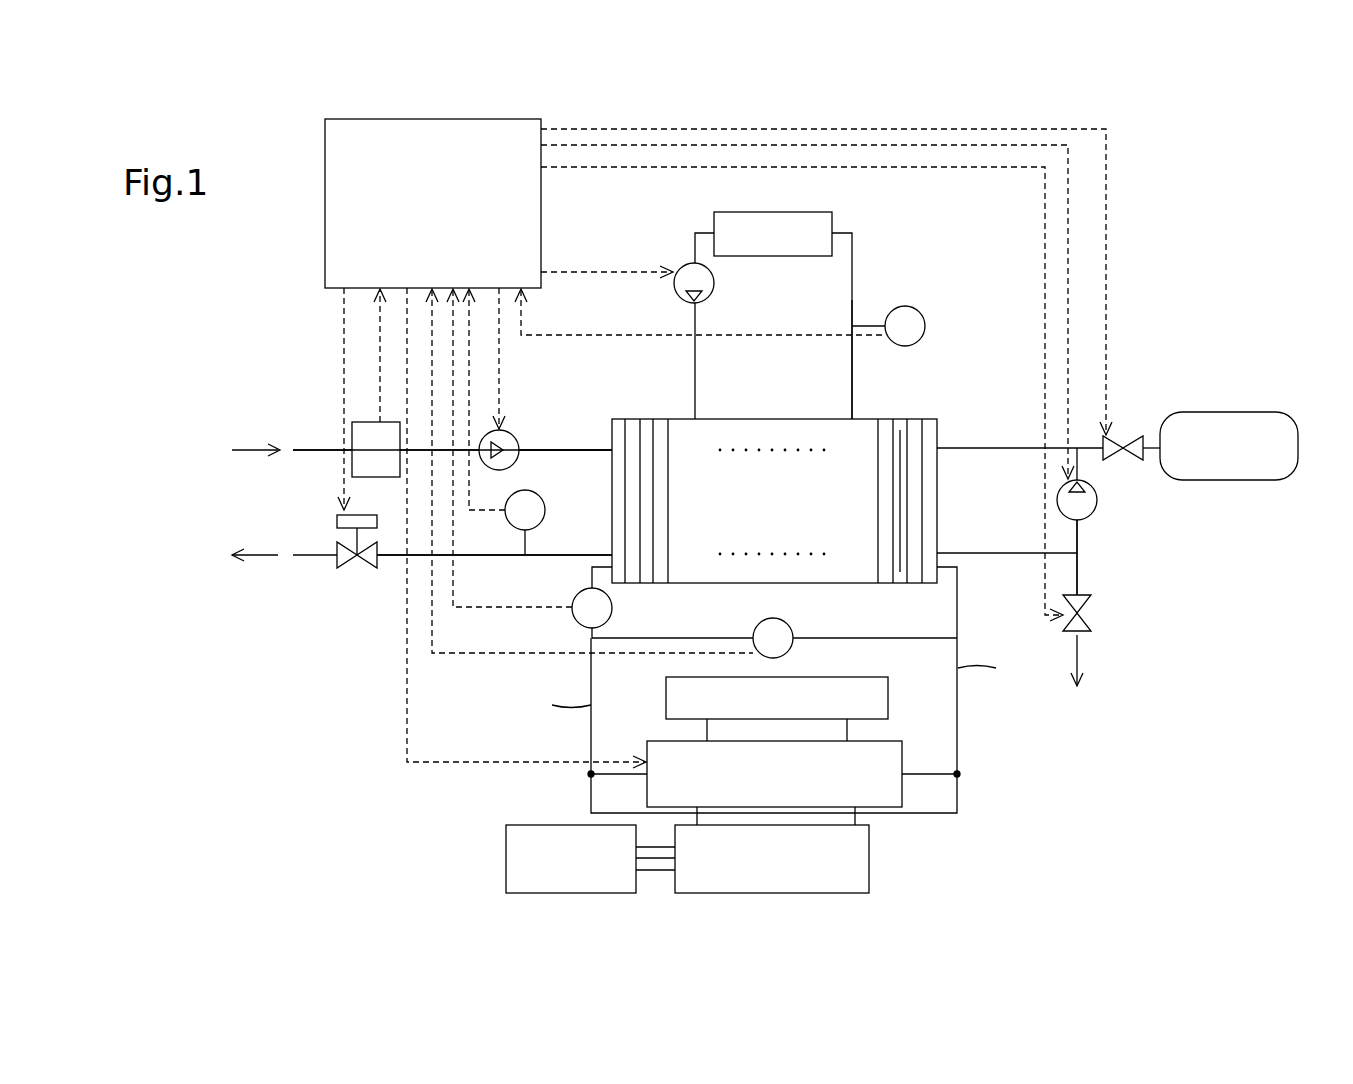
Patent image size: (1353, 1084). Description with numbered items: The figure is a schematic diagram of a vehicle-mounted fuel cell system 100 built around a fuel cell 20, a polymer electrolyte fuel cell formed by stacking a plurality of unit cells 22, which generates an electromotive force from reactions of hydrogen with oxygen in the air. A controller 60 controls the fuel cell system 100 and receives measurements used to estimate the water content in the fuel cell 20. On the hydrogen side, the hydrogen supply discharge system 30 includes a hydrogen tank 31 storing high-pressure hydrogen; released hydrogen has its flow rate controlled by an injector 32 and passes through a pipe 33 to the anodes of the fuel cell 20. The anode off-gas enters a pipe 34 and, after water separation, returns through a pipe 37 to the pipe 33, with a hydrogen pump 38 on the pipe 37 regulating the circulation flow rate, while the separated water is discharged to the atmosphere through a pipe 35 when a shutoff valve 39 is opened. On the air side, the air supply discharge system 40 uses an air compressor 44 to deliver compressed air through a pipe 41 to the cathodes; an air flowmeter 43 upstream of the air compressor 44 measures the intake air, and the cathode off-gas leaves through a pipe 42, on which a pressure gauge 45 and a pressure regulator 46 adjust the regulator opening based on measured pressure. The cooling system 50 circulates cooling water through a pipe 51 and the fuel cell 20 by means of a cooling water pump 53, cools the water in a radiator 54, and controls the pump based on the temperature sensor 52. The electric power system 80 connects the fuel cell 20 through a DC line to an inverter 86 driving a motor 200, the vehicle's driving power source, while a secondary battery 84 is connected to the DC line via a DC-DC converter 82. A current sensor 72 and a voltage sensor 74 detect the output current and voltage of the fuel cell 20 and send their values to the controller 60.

The fuel cell system 100 is at (1180, 168).
The controller 60 is at (325, 231).
The fuel cell 20 is at (915, 419).
The unit cell 22 is at (905, 578).
The cooling system 50 is at (866, 277).
The pipe 51 is at (852, 380).
The temperature sensor 52 is at (920, 311).
The cooling water pump 53 is at (713, 290).
The radiator 54 is at (727, 212).
The air supply discharge system 40 is at (570, 390).
The pipe 41 is at (588, 447).
The pipe 42 is at (560, 555).
The air flowmeter 43 is at (357, 480).
The air compressor 44 is at (513, 436).
The pressure gauge 45 is at (541, 497).
The pressure regulator 46 is at (340, 545).
The hydrogen supply discharge system 30 is at (1198, 364).
The hydrogen tank 31 is at (1218, 412).
The injector 32 is at (1117, 438).
The pipe 33 is at (988, 448).
The pipe 34 is at (965, 553).
The pipe 35 is at (1080, 578).
The pipe 37 is at (1080, 541).
The hydrogen pump 38 is at (1097, 490).
The shutoff valve 39 is at (1092, 618).
The electric power system 80 is at (362, 825).
The current sensor 72 is at (576, 595).
The voltage sensor 74 is at (787, 624).
The DC-DC converter 82 is at (883, 741).
The secondary battery 84 is at (666, 699).
The inverter 86 is at (869, 851).
The motor 200 is at (506, 852).